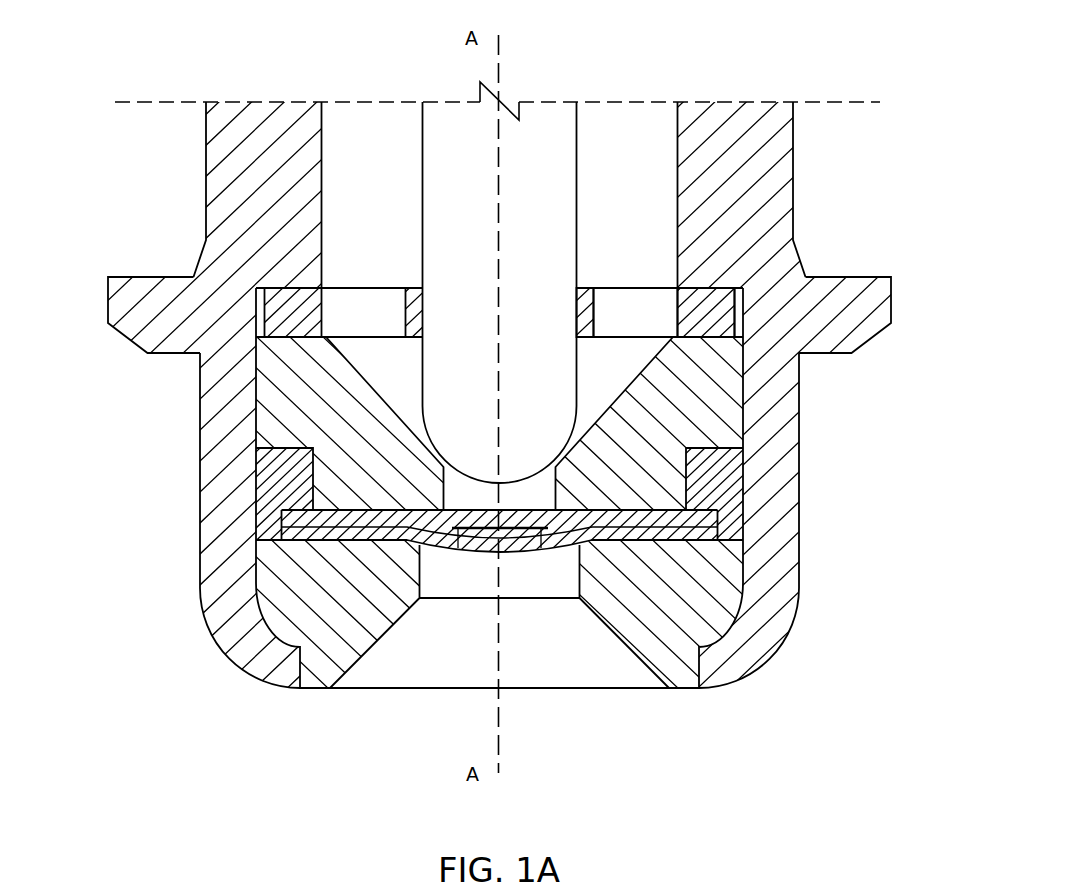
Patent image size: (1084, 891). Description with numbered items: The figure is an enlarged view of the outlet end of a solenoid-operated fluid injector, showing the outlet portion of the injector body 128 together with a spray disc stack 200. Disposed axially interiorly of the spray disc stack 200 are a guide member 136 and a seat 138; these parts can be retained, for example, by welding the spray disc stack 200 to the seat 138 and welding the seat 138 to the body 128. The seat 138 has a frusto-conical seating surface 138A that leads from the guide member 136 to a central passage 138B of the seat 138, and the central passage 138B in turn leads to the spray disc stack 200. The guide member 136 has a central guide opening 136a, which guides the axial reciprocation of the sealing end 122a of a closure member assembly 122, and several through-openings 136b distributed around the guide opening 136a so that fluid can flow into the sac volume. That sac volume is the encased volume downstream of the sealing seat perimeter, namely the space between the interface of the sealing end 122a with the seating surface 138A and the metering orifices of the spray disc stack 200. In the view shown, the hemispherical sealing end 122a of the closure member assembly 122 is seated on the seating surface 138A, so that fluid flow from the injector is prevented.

The closure member assembly 122 is at (625, 128).
The sealing end 122a is at (522, 458).
The body 128 is at (132, 305).
The guide member 136 is at (712, 307).
The central guide opening 136a is at (580, 316).
The through-openings 136b is at (655, 313).
The seat 138 is at (720, 402).
The seating surface 138A is at (380, 400).
The central passage 138B is at (445, 500).
The spray disc stack 200 is at (700, 552).